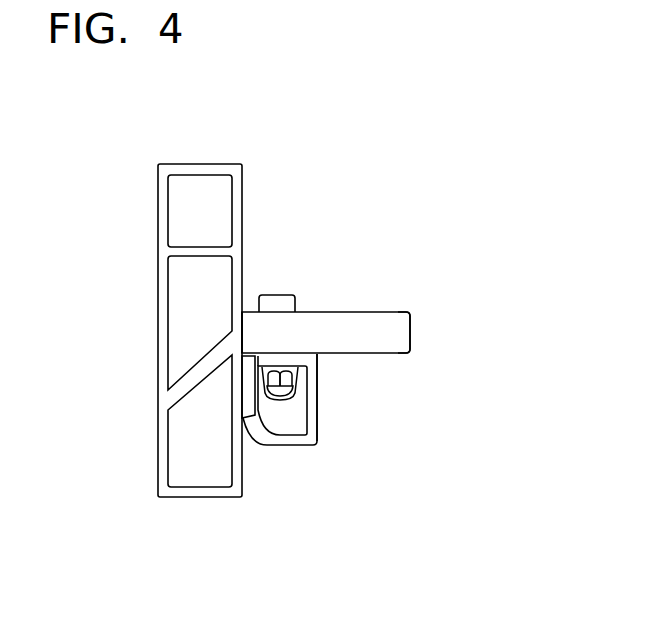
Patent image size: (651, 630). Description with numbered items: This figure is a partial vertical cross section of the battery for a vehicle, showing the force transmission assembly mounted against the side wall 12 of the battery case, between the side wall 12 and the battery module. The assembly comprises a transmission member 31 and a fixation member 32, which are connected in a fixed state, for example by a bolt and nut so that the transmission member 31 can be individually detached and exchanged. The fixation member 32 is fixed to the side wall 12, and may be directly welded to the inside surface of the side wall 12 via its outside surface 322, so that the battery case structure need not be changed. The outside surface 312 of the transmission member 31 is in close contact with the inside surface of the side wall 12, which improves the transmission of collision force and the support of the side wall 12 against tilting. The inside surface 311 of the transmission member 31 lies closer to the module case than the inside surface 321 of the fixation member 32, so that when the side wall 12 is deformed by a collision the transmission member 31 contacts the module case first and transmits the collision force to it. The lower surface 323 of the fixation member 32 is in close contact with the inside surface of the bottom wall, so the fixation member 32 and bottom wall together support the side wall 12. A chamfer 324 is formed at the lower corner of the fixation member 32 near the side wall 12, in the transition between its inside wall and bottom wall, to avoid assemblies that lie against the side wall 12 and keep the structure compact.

The side wall 12 is at (197, 172).
The transmission member 31 is at (342, 335).
The inside surface of the transmission member 311 is at (410, 316).
The outside surface of the transmission member 312 is at (242, 321).
The fixation member 32 is at (316, 444).
The inside surface of the fixation member 321 is at (318, 412).
The outside surface of the fixation member 322 is at (249, 418).
The lower surface of the fixation member 323 is at (290, 446).
The chamfer 324 is at (261, 442).